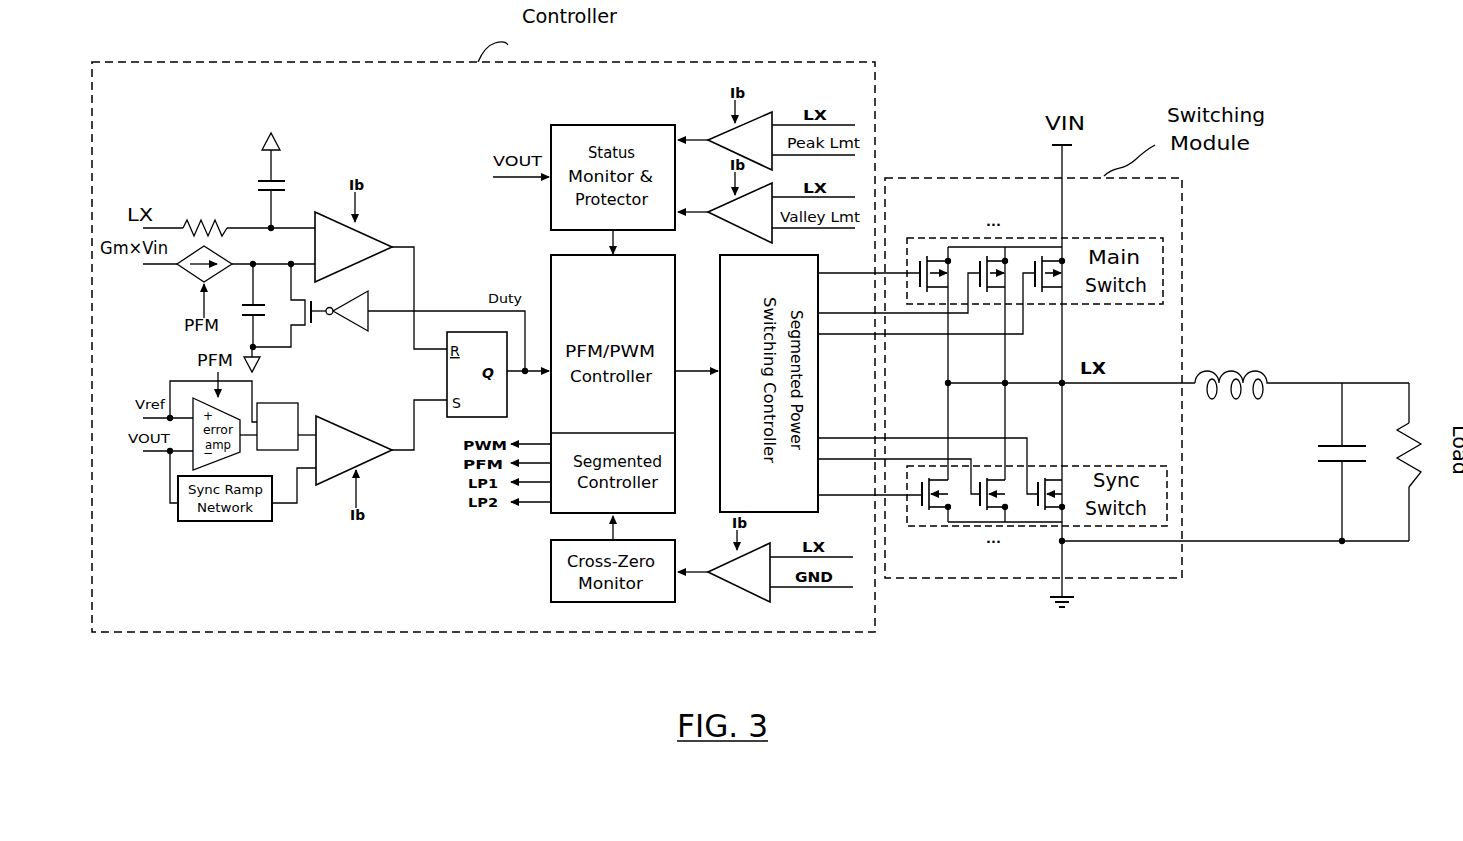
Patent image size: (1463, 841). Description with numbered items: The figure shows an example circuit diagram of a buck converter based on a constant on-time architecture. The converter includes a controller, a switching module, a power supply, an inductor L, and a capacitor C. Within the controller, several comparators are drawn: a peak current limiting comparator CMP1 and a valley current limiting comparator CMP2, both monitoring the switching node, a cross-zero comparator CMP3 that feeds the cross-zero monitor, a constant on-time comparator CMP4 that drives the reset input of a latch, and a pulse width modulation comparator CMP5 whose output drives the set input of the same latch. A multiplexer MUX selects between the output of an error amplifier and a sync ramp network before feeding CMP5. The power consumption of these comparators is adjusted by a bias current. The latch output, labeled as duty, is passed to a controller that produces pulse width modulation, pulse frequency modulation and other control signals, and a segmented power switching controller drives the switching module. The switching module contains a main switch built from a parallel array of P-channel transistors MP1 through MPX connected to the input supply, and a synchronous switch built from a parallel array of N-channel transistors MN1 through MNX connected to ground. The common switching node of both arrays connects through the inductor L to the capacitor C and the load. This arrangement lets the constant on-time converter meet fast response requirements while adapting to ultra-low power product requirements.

The peak current limiting comparator CMP1 is at (740, 141).
The valley current limiting comparator CMP2 is at (740, 213).
The cross-zero comparator CMP3 is at (739, 572).
The COT comparator CMP4 is at (353, 247).
The PWM comparator CMP5 is at (354, 450).
The multiplexer MUX is at (277, 426).
The main switch PMOS transistor MP1 is at (939, 253).
The main switch PMOS transistor MPX is at (1042, 253).
The sync switch NMOS transistor MN1 is at (941, 512).
The sync switch NMOS transistor MNX is at (1040, 512).
The inductor L is at (1235, 374).
The capacitor C is at (1331, 462).